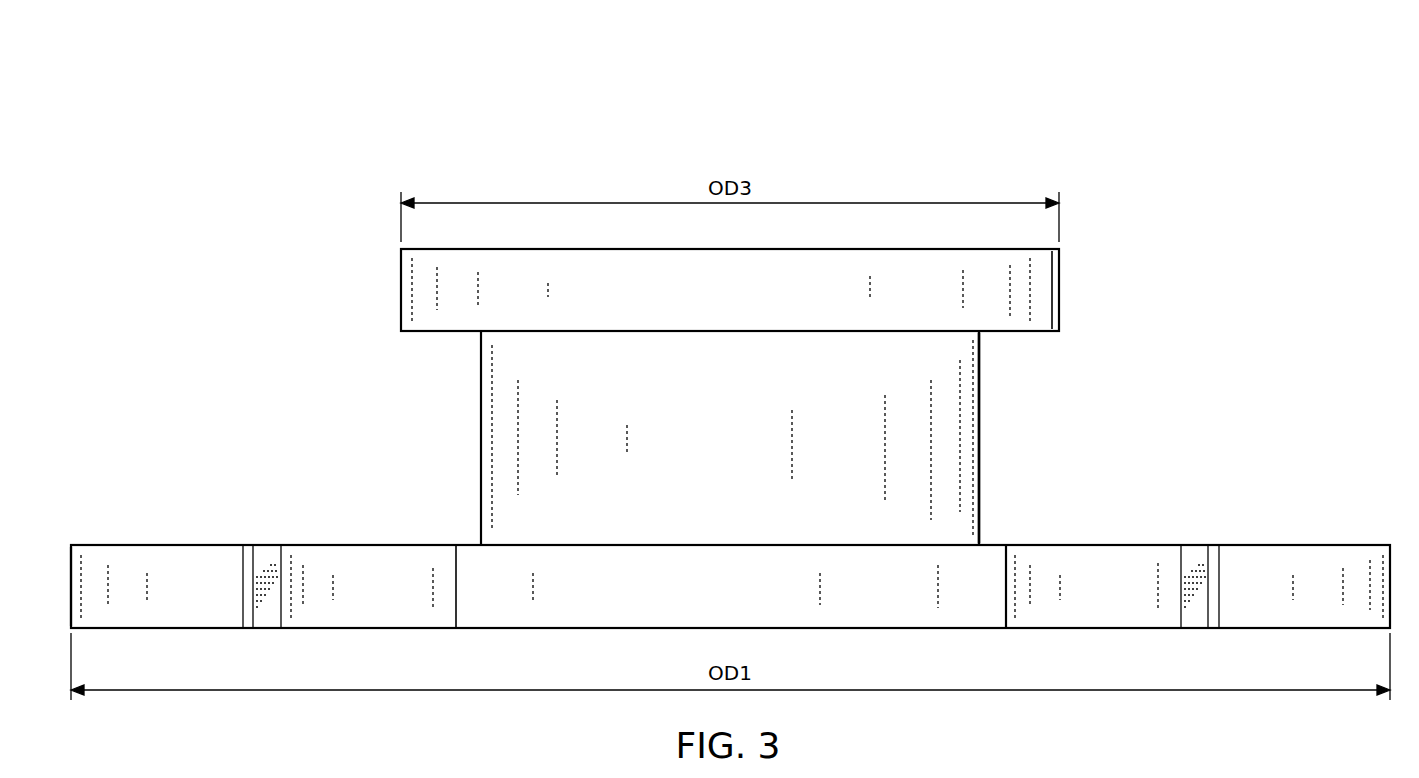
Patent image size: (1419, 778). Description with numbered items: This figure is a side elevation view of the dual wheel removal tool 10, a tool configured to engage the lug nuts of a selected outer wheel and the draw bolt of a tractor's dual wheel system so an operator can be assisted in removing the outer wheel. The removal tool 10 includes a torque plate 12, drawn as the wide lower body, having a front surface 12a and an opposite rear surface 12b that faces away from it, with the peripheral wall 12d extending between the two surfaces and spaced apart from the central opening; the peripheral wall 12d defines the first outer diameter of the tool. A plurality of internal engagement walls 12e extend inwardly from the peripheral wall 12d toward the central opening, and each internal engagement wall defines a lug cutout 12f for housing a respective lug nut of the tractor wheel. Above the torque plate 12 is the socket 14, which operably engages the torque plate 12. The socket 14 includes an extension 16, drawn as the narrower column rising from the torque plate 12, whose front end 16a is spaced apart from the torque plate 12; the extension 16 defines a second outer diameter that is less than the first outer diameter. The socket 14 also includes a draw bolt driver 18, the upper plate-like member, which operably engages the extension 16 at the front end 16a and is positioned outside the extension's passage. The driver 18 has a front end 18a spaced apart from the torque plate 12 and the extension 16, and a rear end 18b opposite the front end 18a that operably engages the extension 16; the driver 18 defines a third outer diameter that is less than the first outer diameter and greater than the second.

The dual wheel removal tool 10 is at (620, 70).
The torque plate 12 is at (1220, 496).
The front surface 12a is at (200, 547).
The rear surface 12b is at (592, 630).
The peripheral wall 12d is at (71, 556).
The internal engagement walls 12e is at (334, 559).
The lug cutout 12f is at (411, 601).
The socket 14 is at (796, 385).
The extension 16 is at (1026, 431).
The front end of extension 16a is at (983, 335).
The draw bolt driver 18 is at (1098, 256).
The front end of driver 18a is at (633, 250).
The rear end of driver 18b is at (786, 332).